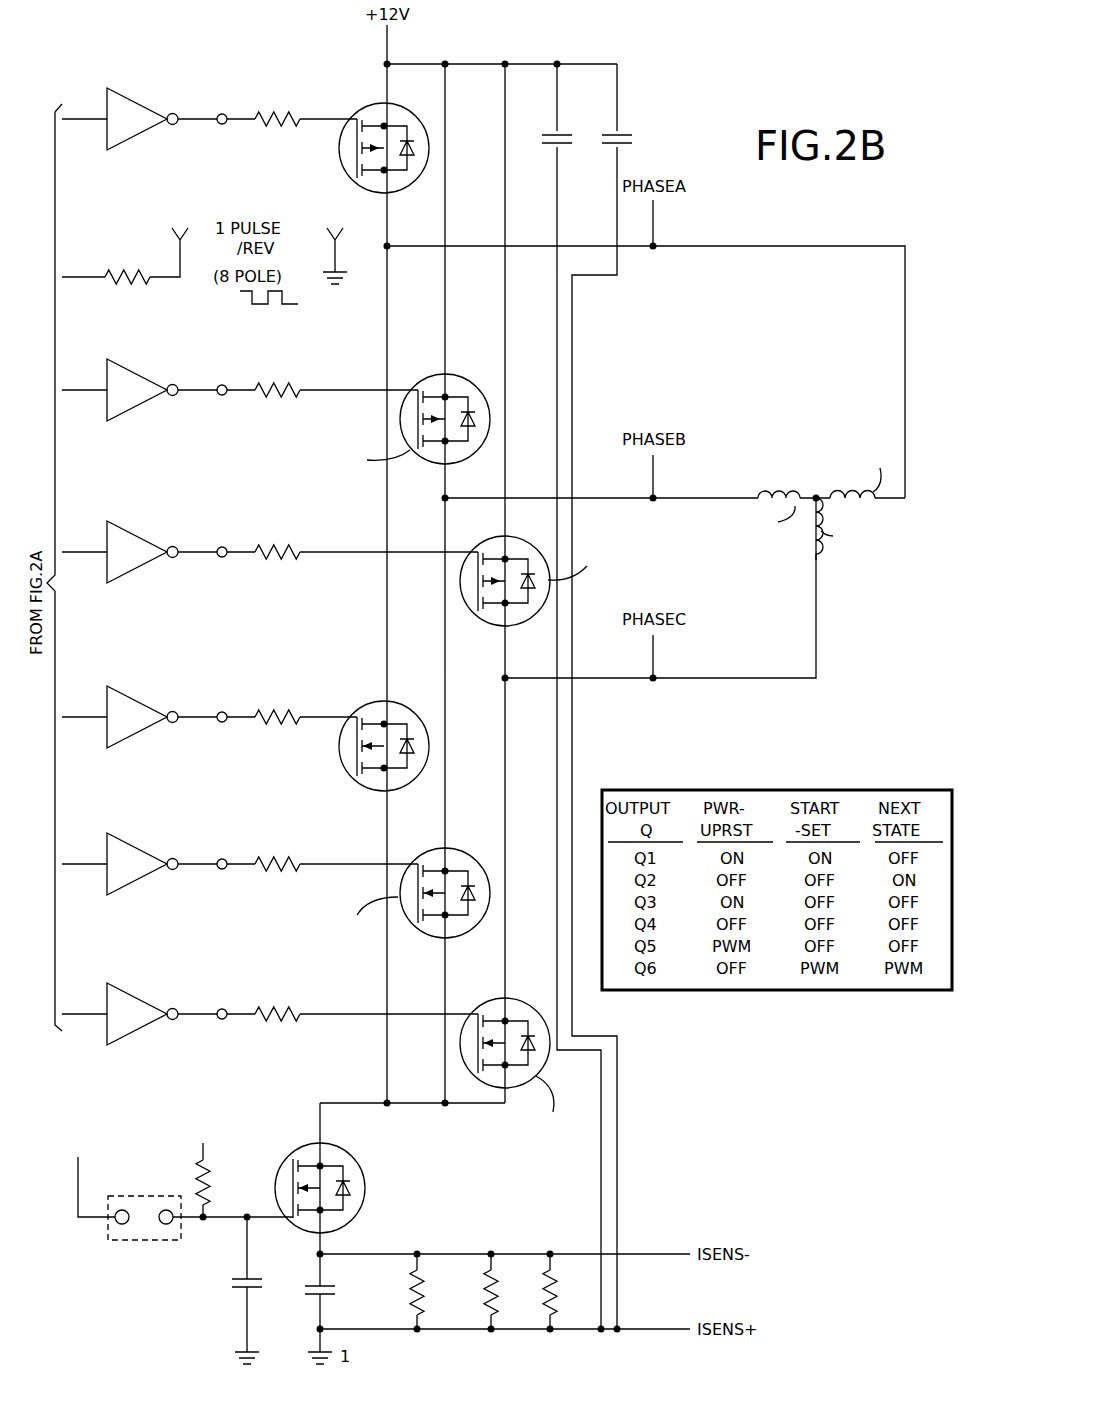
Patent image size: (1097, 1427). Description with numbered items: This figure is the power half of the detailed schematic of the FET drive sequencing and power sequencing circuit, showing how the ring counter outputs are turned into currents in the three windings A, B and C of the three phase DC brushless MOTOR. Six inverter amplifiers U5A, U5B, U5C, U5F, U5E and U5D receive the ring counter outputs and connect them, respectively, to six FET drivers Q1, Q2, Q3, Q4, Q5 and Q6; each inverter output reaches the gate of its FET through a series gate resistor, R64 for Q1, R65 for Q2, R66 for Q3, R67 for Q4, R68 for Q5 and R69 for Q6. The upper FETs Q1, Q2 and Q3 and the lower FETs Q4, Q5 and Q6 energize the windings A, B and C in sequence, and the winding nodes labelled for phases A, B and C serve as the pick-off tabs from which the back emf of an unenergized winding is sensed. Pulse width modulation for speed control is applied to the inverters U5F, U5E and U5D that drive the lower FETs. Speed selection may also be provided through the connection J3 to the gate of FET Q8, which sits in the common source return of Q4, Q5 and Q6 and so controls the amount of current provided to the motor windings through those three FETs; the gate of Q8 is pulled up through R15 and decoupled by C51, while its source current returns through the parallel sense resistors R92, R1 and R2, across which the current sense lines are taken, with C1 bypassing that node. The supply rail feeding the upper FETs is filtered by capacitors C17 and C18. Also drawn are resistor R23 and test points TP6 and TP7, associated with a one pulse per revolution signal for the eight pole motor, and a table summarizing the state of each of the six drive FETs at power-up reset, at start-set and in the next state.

The inverter amplifier U5A is at (158, 117).
The inverter amplifier U5B is at (158, 388).
The inverter amplifier U5C is at (158, 550).
The inverter amplifier U5D is at (158, 1012).
The inverter amplifier U5E is at (158, 862).
The inverter amplifier U5F is at (158, 715).
The gate resistor 470 R64 is at (303, 119).
The gate resistor 470 R65 is at (334, 390).
The gate resistor 470 R66 is at (364, 552).
The gate resistor 470 R67 is at (303, 717).
The gate resistor 470 R68 is at (334, 864).
The gate resistor 470 R69 is at (364, 1014).
The FET driver Q1 is at (338, 149).
The FET driver Q2 is at (378, 416).
The FET driver Q3 is at (557, 583).
The FET driver Q4 is at (339, 744).
The FET driver Q5 is at (384, 895).
The FET driver Q6 is at (506, 1061).
The FET Q8 is at (316, 1195).
The capacitor .47uF C17 is at (542, 153).
The capacitor 47uF 25V C18 is at (634, 139).
The capacitor .01uF C1 is at (346, 1290).
The capacitor 1000pF C51 is at (213, 1290).
The sense resistor R92 is at (435, 1291).
The sense resistor 1 ohm 1W R1 is at (506, 1291).
The sense resistor 1 ohm 1W R2 is at (566, 1291).
The resistor 10K R15 is at (218, 1169).
The resistor 3.0K R23 is at (121, 277).
The connection J3 is at (103, 1203).
The test point TP6 is at (177, 228).
The test point TP7 is at (331, 246).
The DC brushless motor MOTOR is at (823, 503).